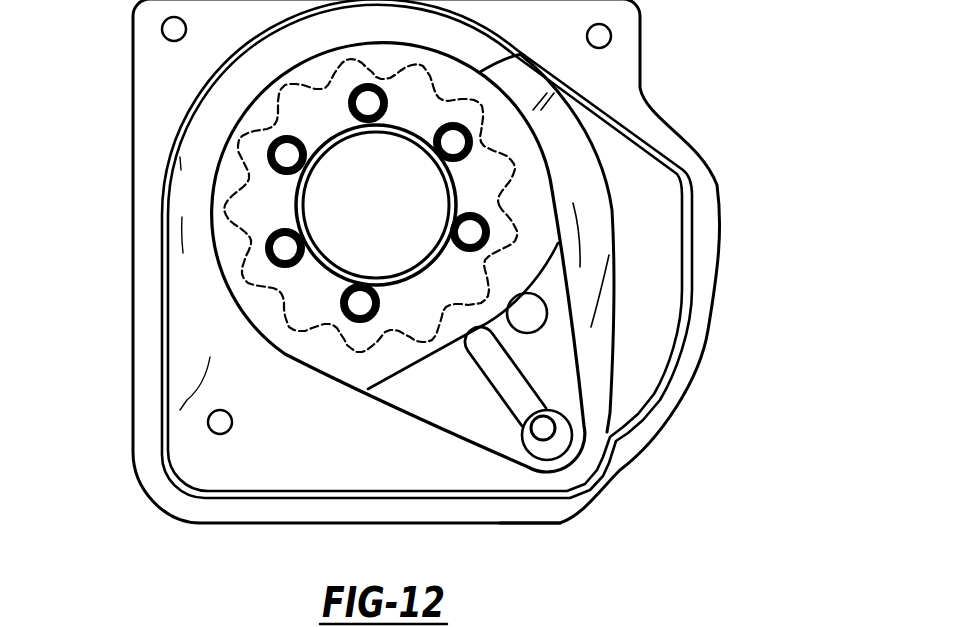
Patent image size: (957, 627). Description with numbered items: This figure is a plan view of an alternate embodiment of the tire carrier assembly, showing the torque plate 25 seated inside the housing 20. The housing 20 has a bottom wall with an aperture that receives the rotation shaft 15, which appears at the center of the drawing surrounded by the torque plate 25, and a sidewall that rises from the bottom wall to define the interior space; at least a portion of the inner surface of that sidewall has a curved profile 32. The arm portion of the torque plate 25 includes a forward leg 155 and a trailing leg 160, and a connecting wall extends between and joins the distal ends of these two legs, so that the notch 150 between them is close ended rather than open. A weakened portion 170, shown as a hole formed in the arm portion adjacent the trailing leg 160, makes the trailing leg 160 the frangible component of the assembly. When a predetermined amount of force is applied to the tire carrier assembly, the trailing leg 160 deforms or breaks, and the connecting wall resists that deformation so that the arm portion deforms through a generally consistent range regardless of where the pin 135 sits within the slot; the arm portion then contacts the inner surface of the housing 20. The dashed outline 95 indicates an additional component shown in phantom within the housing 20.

The housing 20 is at (641, 87).
The torque plate 25 is at (522, 54).
The curved profile 32 is at (684, 286).
The gerotor outer rotor profile 95 is at (287, 108).
The rotation shaft 15 is at (394, 218).
The weakened portion 170 is at (547, 319).
The trailing leg 160 is at (567, 378).
The pin 135 is at (550, 433).
The notch 150 is at (560, 524).
The forward leg 155 is at (477, 423).